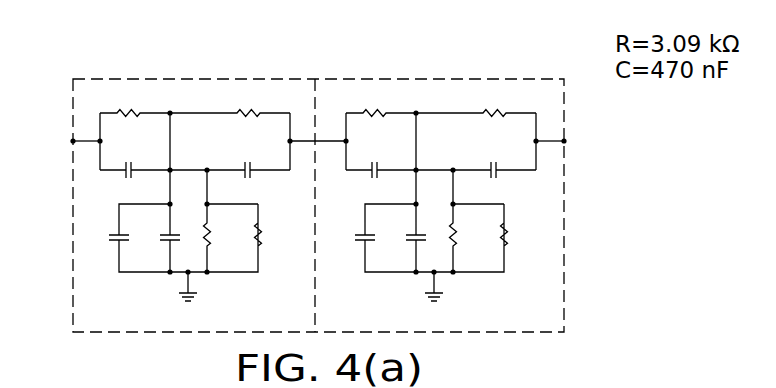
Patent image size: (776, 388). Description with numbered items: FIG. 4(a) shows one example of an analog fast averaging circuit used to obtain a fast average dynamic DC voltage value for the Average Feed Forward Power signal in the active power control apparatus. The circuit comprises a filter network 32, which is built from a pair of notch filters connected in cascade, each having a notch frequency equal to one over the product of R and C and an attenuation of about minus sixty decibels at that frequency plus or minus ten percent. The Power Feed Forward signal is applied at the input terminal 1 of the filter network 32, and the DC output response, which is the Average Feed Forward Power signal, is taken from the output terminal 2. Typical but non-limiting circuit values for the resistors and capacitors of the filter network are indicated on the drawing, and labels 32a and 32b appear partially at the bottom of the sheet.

The filter network 32 is at (321, 170).
The terminal 1 is at (78, 142).
The terminal 2 is at (560, 142).
The filter section 32a is at (62, 384).
The filter section 32b is at (637, 384).